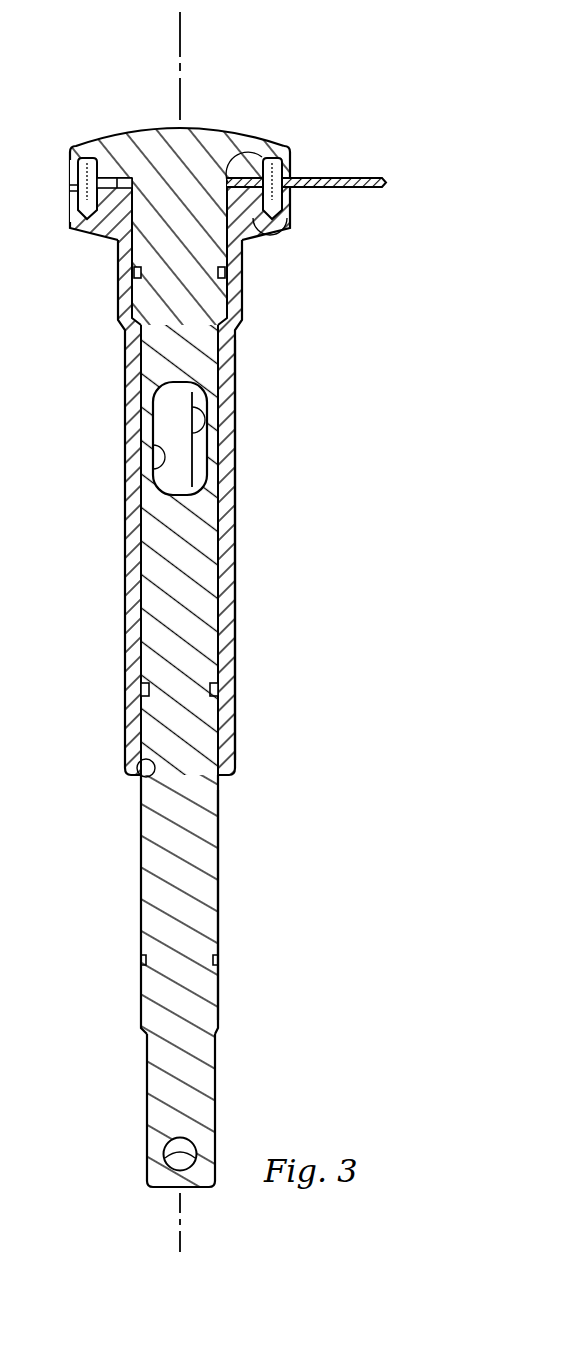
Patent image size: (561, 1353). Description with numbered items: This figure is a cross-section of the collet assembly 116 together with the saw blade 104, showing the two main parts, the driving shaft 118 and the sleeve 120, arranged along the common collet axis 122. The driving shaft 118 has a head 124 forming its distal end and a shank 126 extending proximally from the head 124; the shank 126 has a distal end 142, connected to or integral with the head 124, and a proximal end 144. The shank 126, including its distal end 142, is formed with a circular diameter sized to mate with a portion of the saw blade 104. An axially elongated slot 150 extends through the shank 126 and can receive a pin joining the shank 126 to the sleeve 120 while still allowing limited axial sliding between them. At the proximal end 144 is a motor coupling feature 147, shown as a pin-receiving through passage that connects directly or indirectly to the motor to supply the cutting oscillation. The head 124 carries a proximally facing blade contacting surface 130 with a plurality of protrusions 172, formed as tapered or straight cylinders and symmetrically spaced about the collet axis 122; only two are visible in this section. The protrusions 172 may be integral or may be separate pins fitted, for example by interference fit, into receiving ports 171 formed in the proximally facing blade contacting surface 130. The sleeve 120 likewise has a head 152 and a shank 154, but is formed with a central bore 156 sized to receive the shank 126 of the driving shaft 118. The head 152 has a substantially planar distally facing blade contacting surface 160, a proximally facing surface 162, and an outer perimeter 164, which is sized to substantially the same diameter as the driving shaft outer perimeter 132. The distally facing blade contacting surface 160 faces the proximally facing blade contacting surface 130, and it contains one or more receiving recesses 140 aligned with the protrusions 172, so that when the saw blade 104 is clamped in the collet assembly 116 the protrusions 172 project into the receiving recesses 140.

The saw blade 104 is at (372, 178).
The collet assembly 116 is at (155, 476).
The driving shaft 118 is at (142, 893).
The sleeve 120 is at (125, 380).
The collet axis 122 is at (178, 31).
The head 124 is at (142, 128).
The shank 126 is at (220, 832).
The proximally facing blade contacting surface 130 is at (263, 234).
The driving shaft outer perimeter 132 is at (290, 152).
The receiving recess 140 is at (284, 215).
The distal end 142 is at (145, 235).
The proximal end 144 is at (205, 1082).
The motor coupling feature 147 is at (163, 1158).
The axially elongated slot 150 is at (143, 470).
The head 152 is at (78, 238).
The shank 154 is at (237, 615).
The central bore 156 is at (150, 775).
The distally facing blade contacting surface 160 is at (253, 140).
The proximally facing surface 162 is at (282, 238).
The outer perimeter 164 is at (72, 195).
The receiving ports 171 is at (278, 155).
The protrusions 172 is at (76, 165).